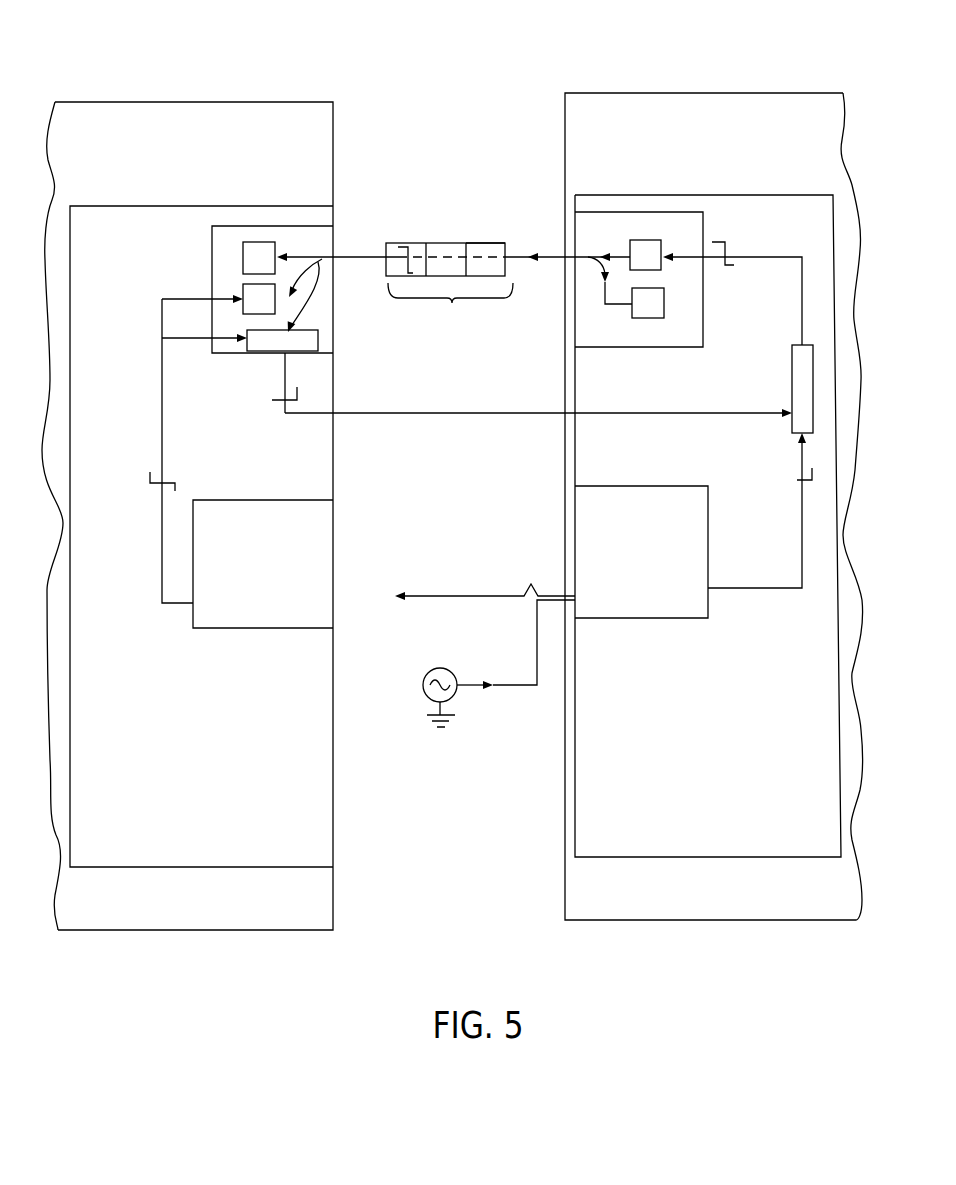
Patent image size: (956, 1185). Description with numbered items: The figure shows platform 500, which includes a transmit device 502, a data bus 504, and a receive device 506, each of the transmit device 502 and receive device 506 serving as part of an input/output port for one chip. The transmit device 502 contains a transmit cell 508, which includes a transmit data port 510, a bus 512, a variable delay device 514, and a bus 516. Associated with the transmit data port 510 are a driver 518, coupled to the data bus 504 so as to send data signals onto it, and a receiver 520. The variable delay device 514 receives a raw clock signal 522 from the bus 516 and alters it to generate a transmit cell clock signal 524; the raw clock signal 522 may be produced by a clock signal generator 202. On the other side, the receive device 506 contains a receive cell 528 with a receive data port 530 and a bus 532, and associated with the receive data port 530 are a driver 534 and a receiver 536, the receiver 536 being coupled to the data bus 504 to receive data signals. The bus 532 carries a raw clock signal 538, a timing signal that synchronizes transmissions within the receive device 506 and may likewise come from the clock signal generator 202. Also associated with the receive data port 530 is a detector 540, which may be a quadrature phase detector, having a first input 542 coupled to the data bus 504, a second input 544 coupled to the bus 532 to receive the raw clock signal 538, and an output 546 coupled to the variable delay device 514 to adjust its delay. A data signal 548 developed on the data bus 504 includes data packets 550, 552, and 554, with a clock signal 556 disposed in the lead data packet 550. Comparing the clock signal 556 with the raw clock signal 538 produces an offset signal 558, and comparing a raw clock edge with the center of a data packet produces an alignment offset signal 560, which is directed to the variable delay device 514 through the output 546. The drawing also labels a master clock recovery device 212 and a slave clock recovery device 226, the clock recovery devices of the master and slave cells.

The platform 500 is at (454, 58).
The transmit device 502 is at (803, 120).
The data bus 504 is at (550, 253).
The receive device 506 is at (90, 142).
The transmit cell 508 is at (792, 222).
The transmit data port 510 is at (577, 235).
The bus 512 is at (763, 258).
The variable delay device 514 is at (791, 360).
The bus 516 is at (770, 590).
The driver 518 is at (637, 240).
The receiver 520 is at (650, 318).
The raw clock signal 522 is at (797, 480).
The transmit cell clock signal 524 is at (728, 243).
The receive cell 528 is at (88, 246).
The receive data port 530 is at (292, 250).
The bus 532 is at (161, 548).
The driver 534 is at (243, 253).
The receiver 536 is at (243, 288).
The raw clock signal 538 is at (150, 483).
The detector 540 is at (262, 351).
The first input 542 is at (330, 305).
The second input 544 is at (238, 336).
The output 546 is at (285, 370).
The data signal 548 is at (449, 287).
The data packet 550 is at (420, 243).
The data packet 552 is at (462, 243).
The data packet 554 is at (504, 243).
The clock signal 556 is at (398, 263).
The offset signal 558 is at (272, 400).
The offset signal 560 is at (272, 400).
The master clock recovery device 212 is at (213, 525).
The slave clock recovery device 226 is at (583, 517).
The clock signal generator 202 is at (425, 695).